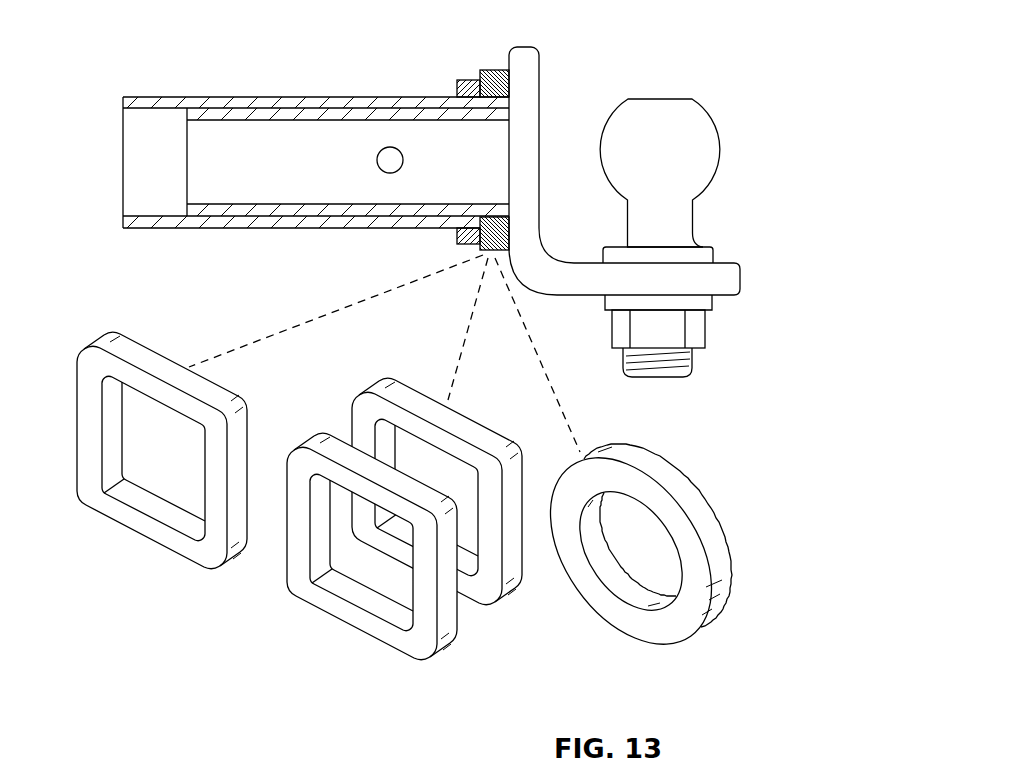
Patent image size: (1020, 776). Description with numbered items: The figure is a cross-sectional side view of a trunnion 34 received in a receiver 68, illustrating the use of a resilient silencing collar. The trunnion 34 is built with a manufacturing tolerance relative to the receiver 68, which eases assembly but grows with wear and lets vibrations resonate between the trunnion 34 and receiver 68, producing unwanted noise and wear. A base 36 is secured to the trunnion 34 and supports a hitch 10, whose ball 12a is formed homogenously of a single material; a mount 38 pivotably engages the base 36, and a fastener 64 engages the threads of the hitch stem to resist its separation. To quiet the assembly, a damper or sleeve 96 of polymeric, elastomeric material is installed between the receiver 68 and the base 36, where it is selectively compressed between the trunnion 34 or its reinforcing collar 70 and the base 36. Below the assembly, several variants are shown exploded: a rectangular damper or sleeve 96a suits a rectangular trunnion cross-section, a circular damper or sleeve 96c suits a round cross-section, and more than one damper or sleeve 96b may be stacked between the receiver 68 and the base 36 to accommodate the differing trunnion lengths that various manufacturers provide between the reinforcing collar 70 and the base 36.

The hitch 10 is at (698, 96).
The ball 12a is at (655, 108).
The trunnion 34 is at (357, 133).
The base 36 is at (535, 66).
The mount 38 is at (725, 280).
The fastener 64 is at (678, 338).
The receiver 68 is at (213, 97).
The reinforcing collar 70 is at (466, 79).
The damper or sleeve 96 is at (497, 73).
The rectangular damper or sleeve 96a is at (133, 522).
The damper or sleeve 96b is at (466, 649).
The circular damper or sleeve 96c is at (645, 630).